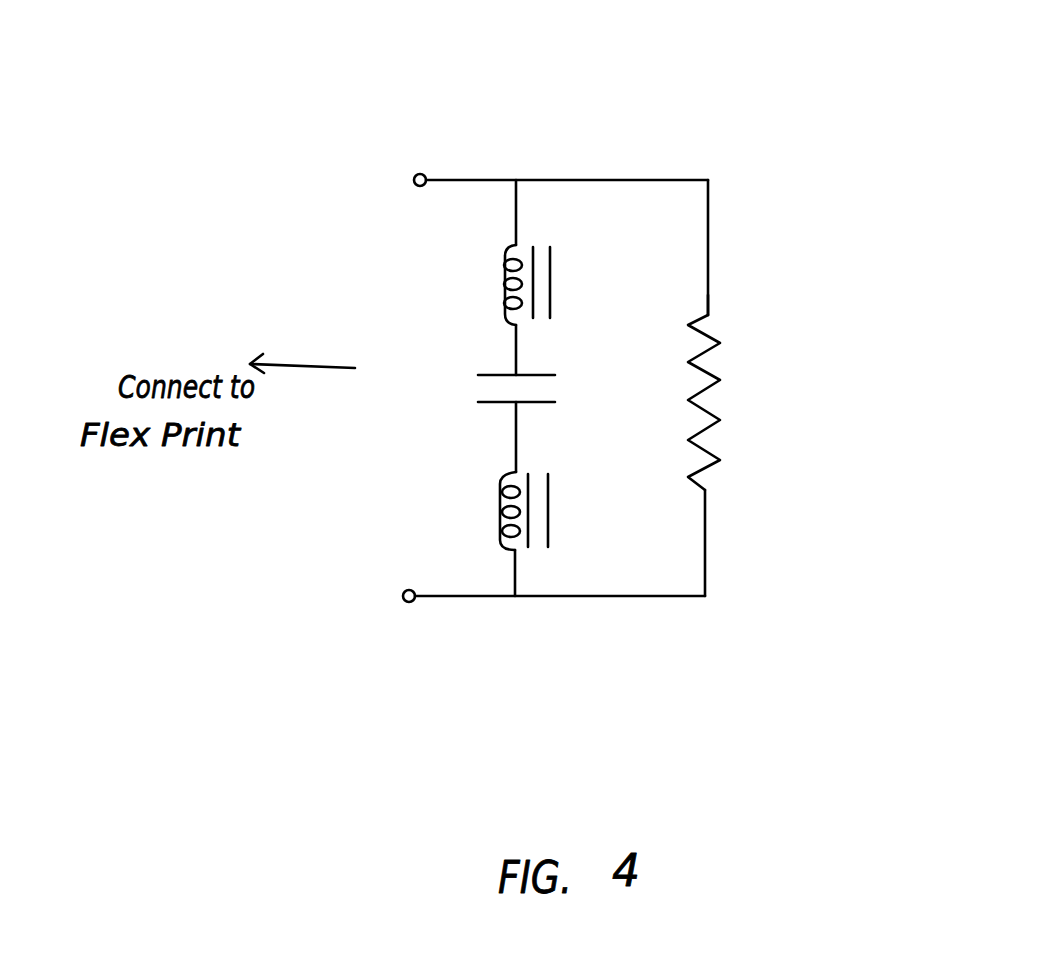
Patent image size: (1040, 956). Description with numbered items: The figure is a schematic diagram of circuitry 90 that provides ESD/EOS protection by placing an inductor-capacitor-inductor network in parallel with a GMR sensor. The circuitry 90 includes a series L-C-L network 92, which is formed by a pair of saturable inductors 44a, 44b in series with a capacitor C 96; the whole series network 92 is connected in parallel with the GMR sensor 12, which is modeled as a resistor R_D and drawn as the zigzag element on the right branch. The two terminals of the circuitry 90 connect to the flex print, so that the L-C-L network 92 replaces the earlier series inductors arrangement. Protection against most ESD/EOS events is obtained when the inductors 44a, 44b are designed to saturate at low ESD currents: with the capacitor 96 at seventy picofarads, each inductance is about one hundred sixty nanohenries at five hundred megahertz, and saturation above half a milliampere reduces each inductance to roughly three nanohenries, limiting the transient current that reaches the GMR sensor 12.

The circuitry 90 is at (883, 152).
The L-C-L network 92 is at (656, 302).
The GMR sensor 12 is at (760, 431).
The inductor L 44a is at (493, 284).
The inductor L 44b is at (476, 511).
The capacitor C 96 is at (485, 412).